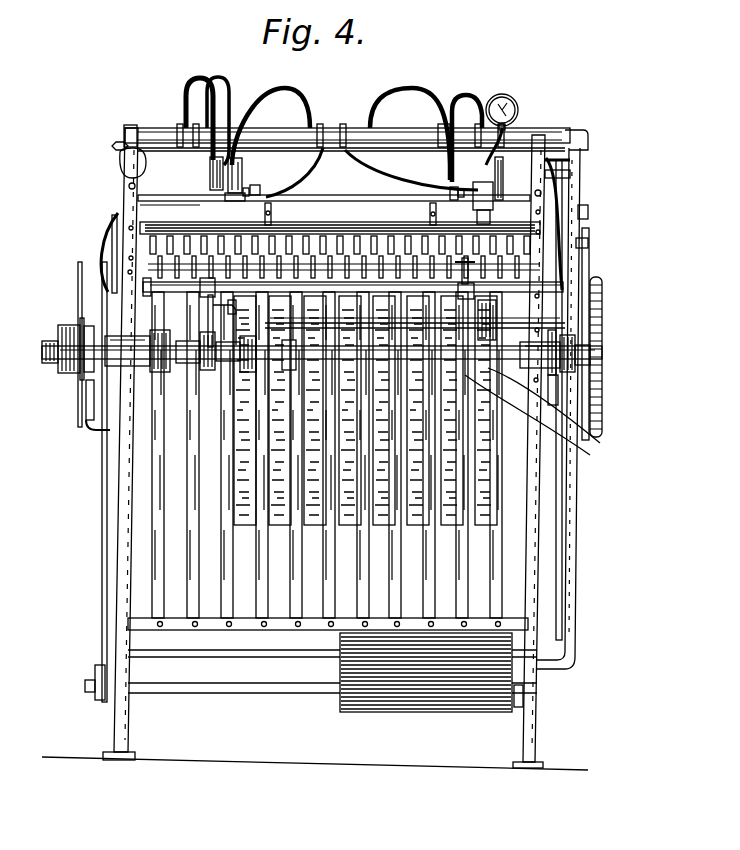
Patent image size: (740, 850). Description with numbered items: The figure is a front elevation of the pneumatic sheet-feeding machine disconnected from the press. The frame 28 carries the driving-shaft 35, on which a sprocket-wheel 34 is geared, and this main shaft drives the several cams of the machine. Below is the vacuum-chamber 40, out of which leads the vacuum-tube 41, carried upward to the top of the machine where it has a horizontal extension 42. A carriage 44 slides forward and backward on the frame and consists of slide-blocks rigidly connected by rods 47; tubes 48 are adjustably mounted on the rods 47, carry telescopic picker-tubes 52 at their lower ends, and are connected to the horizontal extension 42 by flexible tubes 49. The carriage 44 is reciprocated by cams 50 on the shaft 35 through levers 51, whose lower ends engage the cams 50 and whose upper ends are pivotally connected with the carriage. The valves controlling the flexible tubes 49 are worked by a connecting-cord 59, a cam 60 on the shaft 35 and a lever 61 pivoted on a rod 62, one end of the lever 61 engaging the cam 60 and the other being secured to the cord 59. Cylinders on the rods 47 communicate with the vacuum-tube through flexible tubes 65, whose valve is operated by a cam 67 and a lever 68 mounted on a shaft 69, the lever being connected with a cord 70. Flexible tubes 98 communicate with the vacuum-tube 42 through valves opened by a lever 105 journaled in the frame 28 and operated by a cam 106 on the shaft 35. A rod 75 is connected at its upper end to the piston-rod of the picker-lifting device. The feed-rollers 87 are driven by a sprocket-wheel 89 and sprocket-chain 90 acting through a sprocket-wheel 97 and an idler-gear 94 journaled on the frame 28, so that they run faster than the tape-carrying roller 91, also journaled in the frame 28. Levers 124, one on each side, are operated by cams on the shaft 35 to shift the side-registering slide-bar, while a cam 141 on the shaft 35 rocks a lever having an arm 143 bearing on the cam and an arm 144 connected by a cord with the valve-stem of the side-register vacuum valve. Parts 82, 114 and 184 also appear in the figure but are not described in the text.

The frame 28 is at (130, 197).
The horizontal extension 42 is at (268, 134).
The vacuum-tube 41 is at (588, 203).
The rod 75 is at (218, 157).
The flexible tubes 98 is at (186, 86).
The flexible tubes 49 is at (216, 100).
The flexible tubes 65 is at (302, 98).
The tubes 48 is at (240, 160).
The fitting 82 is at (262, 186).
The hose 114 is at (292, 182).
The rods 47 is at (158, 198).
The carriage 44 is at (170, 212).
The telescopic picker-tubes 52 is at (230, 214).
The feed-roller 87 is at (272, 212).
The tape-carrying roller 91 is at (297, 238).
The pin row 184 is at (344, 250).
The cord 70 is at (125, 178).
The arm 144 is at (118, 232).
The levers 51 is at (105, 262).
The lever 124 is at (148, 342).
The driving-shaft 35 is at (46, 356).
The cams 50 is at (84, 378).
The sprocket-wheel 34 is at (85, 410).
The cam 106 is at (200, 365).
The lever 105 is at (232, 322).
The lever 68 is at (415, 332).
The shaft 69 is at (346, 325).
The cam 67 is at (247, 375).
The rod 62 is at (285, 373).
The arm 143 is at (488, 294).
The lever 61 is at (600, 294).
The sprocket-wheel 89 is at (604, 384).
The cam 60 is at (604, 425).
The sprocket-chain 90 is at (547, 415).
The cam 141 is at (582, 462).
The connecting-cord 59 is at (585, 178).
The idler-gear 94 is at (595, 213).
The sprocket-wheel 97 is at (587, 244).
The vacuum-chamber 40 is at (332, 665).